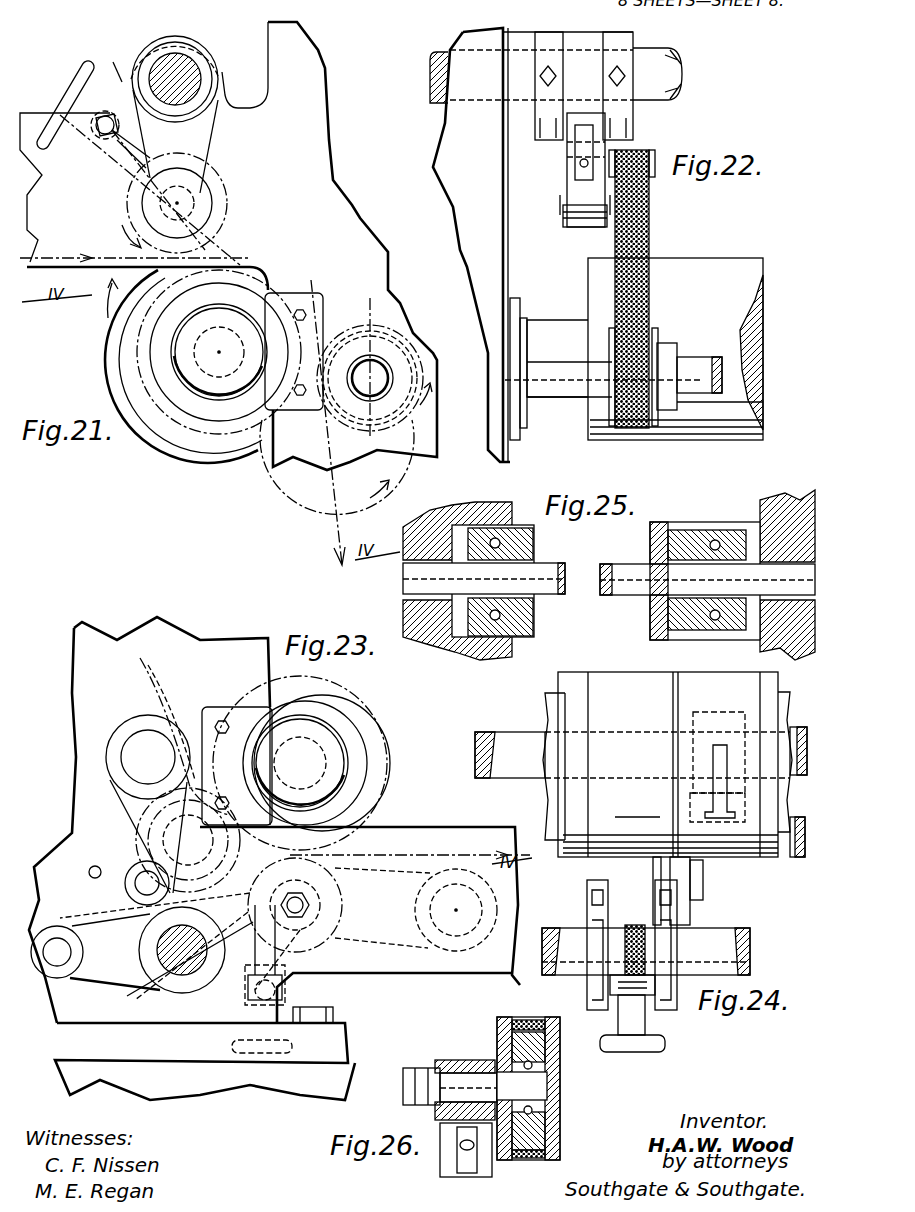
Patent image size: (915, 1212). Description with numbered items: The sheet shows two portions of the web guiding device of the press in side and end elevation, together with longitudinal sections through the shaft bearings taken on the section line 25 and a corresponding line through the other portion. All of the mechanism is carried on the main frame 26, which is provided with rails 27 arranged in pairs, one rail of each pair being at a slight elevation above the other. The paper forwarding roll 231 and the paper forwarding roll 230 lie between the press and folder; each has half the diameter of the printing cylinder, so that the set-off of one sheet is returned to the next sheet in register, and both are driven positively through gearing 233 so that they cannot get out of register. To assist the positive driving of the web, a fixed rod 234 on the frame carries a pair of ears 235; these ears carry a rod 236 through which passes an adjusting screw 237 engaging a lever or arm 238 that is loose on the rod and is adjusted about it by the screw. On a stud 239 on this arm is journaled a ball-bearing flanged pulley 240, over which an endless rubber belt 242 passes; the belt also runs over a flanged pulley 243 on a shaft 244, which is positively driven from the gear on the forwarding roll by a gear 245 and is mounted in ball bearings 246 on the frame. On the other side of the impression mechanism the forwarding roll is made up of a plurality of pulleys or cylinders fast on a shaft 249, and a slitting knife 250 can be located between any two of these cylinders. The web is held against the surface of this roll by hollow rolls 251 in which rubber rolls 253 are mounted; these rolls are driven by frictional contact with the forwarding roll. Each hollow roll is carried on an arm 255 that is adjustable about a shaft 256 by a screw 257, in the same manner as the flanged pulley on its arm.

In FIG. 21, the section line 25 is at (370, 300).
In FIG. 21, the main frame 26 is at (358, 224).
In FIG. 25, the main frame 26 is at (462, 658).
In FIG. 23, the main frame 26 is at (76, 700).
In FIG. 23, the rails 27 is at (408, 840).
In FIG. 24, the paper forwarding roll 230 is at (640, 666).
In FIG. 23, the paper forwarding roll 230 is at (392, 770).
In FIG. 21, the forwarding roll 231 is at (193, 440).
In FIG. 22, the forwarding roll 231 is at (745, 262).
In FIG. 21, the gearing 233 is at (290, 510).
In FIG. 21, the fixed rod 234 is at (185, 58).
In FIG. 22, the fixed rod 234 is at (662, 58).
In FIG. 21, the ears 235 is at (128, 52).
In FIG. 22, the ears 235 is at (620, 42).
In FIG. 21, the rod 236 is at (103, 136).
In FIG. 21, the adjusting screw 237 is at (80, 106).
In FIG. 21, the lever or arm 238 is at (214, 127).
In FIG. 22, the lever or arm 238 is at (567, 172).
In FIG. 21, the stud 239 is at (170, 203).
In FIG. 22, the stud 239 is at (563, 214).
In FIG. 21, the flanged pulley 240 is at (212, 194).
In FIG. 22, the flanged pulley 240 is at (658, 215).
In FIG. 21, the endless rubber belt 242 is at (305, 268).
In FIG. 22, the endless rubber belt 242 is at (652, 280).
In FIG. 21, the flanged pulley 243 is at (396, 352).
In FIG. 22, the flanged pulley 243 is at (665, 328).
In FIG. 21, the shaft 244 is at (378, 366).
In FIG. 22, the shaft 244 is at (695, 362).
In FIG. 25, the shaft 244 is at (612, 568).
In FIG. 25, the gear 245 is at (667, 528).
In FIG. 25, the ball bearings 246 is at (720, 538).
In FIG. 24, the shaft 249 is at (506, 734).
In FIG. 24, the slitting knife 250 is at (705, 887).
In FIG. 23, the slitting knife 250 is at (132, 845).
In FIG. 24, the hollow rolls 251 is at (700, 910).
In FIG. 23, the hollow rolls 251 is at (330, 920).
In FIG. 26, the hollow rolls 251 is at (560, 1105).
In FIG. 26, the rubber rolls 253 is at (555, 1048).
In FIG. 24, the arm 255 is at (633, 897).
In FIG. 23, the arm 255 is at (300, 928).
In FIG. 26, the arm 255 is at (470, 1056).
In FIG. 24, the shaft 256 is at (752, 945).
In FIG. 23, the shaft 256 is at (165, 965).
In FIG. 24, the screw 257 is at (668, 1040).
In FIG. 23, the screw 257 is at (283, 1047).